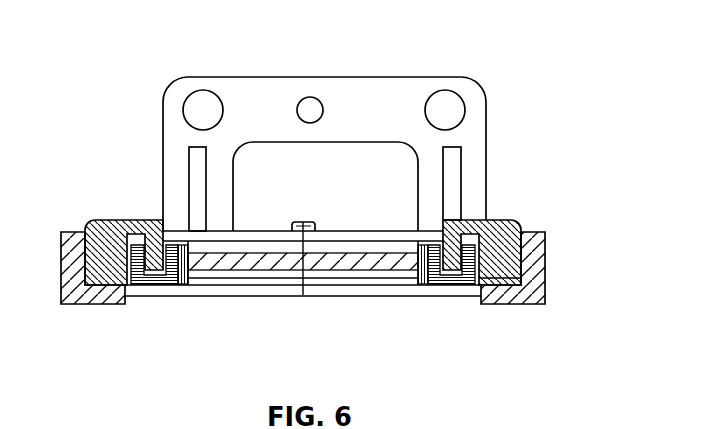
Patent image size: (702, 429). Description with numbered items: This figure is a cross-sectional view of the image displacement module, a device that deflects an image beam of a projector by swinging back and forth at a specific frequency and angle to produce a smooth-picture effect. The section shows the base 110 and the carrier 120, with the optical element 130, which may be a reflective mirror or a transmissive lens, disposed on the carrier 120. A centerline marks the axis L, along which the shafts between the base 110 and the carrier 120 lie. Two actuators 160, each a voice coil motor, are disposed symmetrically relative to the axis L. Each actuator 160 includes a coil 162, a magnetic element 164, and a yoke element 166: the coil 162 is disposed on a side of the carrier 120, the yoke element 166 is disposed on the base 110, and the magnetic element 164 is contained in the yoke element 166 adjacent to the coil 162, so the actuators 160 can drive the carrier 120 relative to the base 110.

The base 110 is at (543, 254).
The carrier 120 is at (430, 282).
The optical element 130 is at (344, 263).
The axis L is at (297, 262).
The actuator 160 is at (464, 303).
The coil 162 is at (458, 279).
The magnetic element 164 is at (493, 282).
The yoke element 166 is at (506, 283).